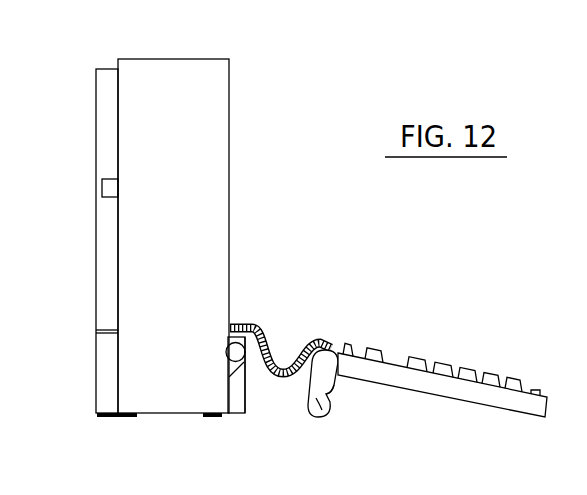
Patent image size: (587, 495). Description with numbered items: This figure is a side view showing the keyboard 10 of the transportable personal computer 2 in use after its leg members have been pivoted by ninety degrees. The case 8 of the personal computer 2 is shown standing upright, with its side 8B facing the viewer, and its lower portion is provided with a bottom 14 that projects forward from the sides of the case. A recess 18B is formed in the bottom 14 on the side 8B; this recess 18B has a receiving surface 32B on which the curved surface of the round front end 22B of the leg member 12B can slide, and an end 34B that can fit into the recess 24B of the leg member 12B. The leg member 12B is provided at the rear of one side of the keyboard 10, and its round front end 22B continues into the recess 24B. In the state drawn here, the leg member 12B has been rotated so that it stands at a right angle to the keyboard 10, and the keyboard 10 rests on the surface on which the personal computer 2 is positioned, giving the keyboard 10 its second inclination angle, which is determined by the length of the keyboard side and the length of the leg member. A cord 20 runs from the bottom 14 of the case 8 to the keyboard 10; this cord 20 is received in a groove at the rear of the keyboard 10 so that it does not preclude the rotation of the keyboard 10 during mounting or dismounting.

The transportable personal computer 2 is at (86, 116).
The case 8 is at (172, 59).
The side of the case 8B is at (138, 233).
The keyboard 10 is at (532, 410).
The leg member 12B is at (335, 385).
The bottom 14 is at (235, 405).
The recess 18B is at (234, 348).
The cord 20 is at (267, 353).
The round front end 22B is at (322, 408).
The recess 24B is at (333, 397).
The receiving surface 32B is at (235, 368).
The end 34B is at (244, 357).